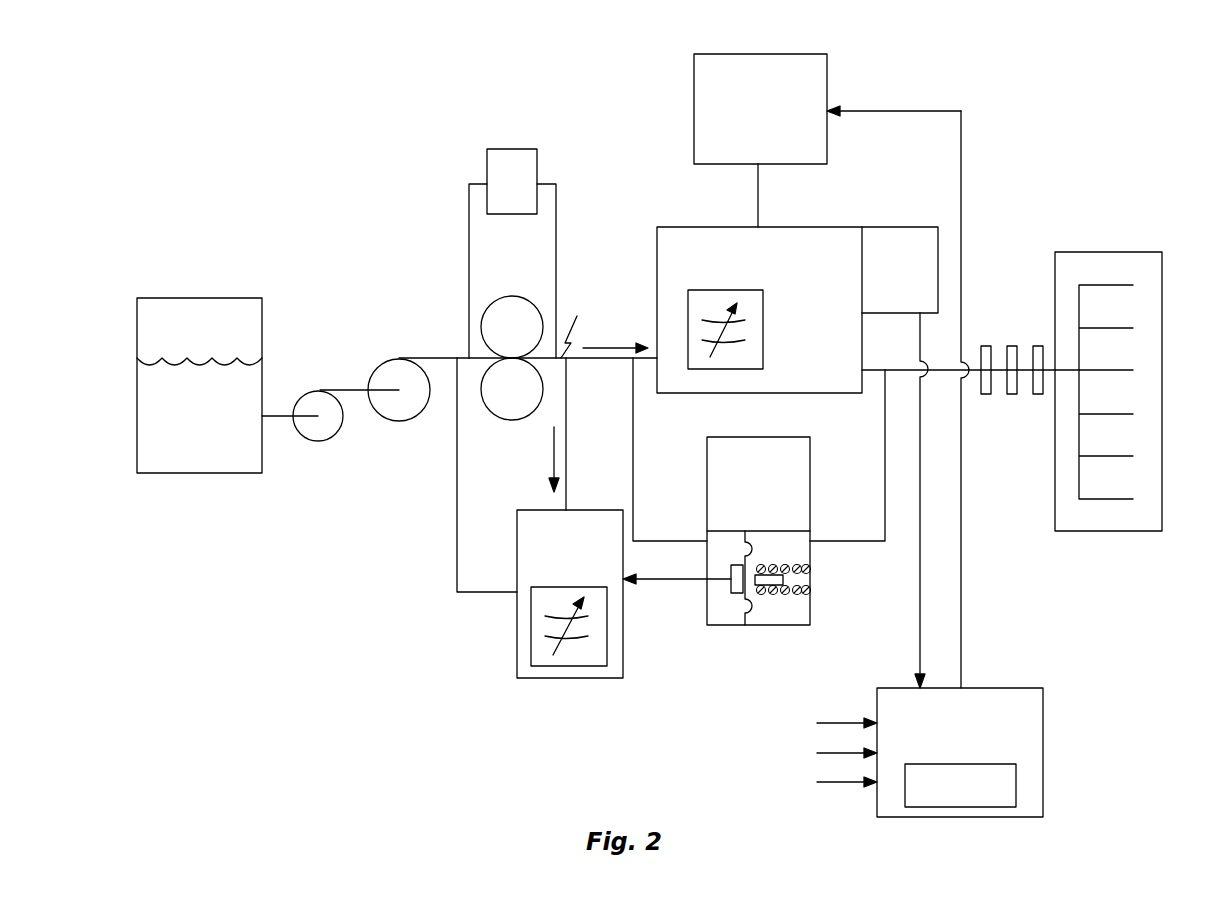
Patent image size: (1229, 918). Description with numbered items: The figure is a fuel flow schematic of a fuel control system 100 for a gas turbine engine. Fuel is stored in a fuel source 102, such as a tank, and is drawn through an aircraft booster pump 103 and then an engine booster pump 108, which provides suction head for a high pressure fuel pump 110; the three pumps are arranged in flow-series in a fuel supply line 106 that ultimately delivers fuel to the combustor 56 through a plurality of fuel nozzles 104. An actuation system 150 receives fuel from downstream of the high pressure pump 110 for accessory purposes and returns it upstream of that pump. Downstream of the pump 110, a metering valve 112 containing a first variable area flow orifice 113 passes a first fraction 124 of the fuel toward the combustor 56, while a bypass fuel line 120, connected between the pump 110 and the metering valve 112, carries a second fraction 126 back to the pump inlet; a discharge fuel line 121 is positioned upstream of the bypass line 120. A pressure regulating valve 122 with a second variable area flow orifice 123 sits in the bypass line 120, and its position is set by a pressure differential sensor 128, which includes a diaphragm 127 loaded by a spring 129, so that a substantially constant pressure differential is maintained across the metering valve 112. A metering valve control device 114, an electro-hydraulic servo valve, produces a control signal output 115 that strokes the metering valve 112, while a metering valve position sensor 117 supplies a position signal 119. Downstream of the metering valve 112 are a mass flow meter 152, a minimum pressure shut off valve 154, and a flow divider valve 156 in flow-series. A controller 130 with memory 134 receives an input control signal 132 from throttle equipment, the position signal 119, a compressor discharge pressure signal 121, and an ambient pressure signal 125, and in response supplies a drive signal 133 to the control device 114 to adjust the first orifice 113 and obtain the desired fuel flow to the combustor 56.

The fuel control system 100 is at (252, 685).
The fuel source 102 is at (193, 298).
The aircraft booster pump 103 is at (328, 441).
The engine booster pump 108 is at (374, 372).
The discharge fuel line 121 is at (438, 358).
The actuation system 150 is at (522, 149).
The high pressure fuel pump 110 is at (493, 302).
The fuel supply line 106 is at (583, 324).
The first fraction 124 is at (617, 348).
The metering valve 112 is at (702, 227).
The first variable area flow orifice 113 is at (764, 315).
The metering valve control device 114 is at (694, 118).
The metering valve control signal output 115 is at (760, 196).
The metering valve position sensor 117 is at (878, 227).
The bypass fuel line 120 is at (566, 442).
The second fraction 126 is at (554, 457).
The pressure regulating valve 122 is at (517, 648).
The second variable area flow orifice 123 is at (570, 666).
The pressure differential sensor 128 is at (810, 484).
The spring 129 is at (810, 600).
The diaphragm 127 is at (746, 625).
The metering valve position signal 119 is at (920, 638).
The drive signal 133 is at (961, 555).
The controller 130 is at (1000, 688).
The memory 134 is at (1016, 780).
The input control signal 132 is at (843, 723).
The ambient pressure signal 125 is at (848, 782).
The minimum pressure shut off valve 154 is at (986, 346).
The mass flow meter 152 is at (1012, 346).
The flow divider valve 156 is at (1038, 346).
The combustor 56 is at (1077, 252).
The fuel nozzles 104 is at (1133, 510).